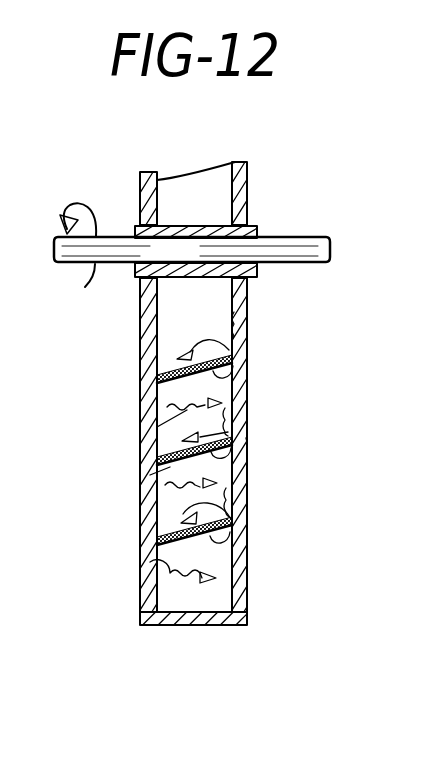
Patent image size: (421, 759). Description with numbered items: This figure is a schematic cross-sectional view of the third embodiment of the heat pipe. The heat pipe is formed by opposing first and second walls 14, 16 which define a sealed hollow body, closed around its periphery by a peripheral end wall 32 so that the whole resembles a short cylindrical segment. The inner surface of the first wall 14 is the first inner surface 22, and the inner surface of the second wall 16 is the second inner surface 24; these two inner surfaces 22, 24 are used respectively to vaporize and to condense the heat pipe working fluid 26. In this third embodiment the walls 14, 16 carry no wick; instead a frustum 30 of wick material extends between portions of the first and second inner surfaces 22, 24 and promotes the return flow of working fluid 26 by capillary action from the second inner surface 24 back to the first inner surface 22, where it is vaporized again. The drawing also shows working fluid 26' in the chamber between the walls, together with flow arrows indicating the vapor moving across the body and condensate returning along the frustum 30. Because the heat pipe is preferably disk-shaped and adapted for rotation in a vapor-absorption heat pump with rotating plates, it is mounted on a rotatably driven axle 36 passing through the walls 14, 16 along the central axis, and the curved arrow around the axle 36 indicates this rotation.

The first wall 14 is at (140, 607).
The second wall 16 is at (247, 600).
The first inner surface 22 is at (157, 328).
The second inner surface 24 is at (232, 311).
The working fluid 26 is at (147, 450).
The alternate baffle plates 26' is at (141, 505).
The frustum 30 is at (247, 537).
The peripheral end wall 32 is at (186, 626).
The rotatably driven axle 36 is at (313, 238).